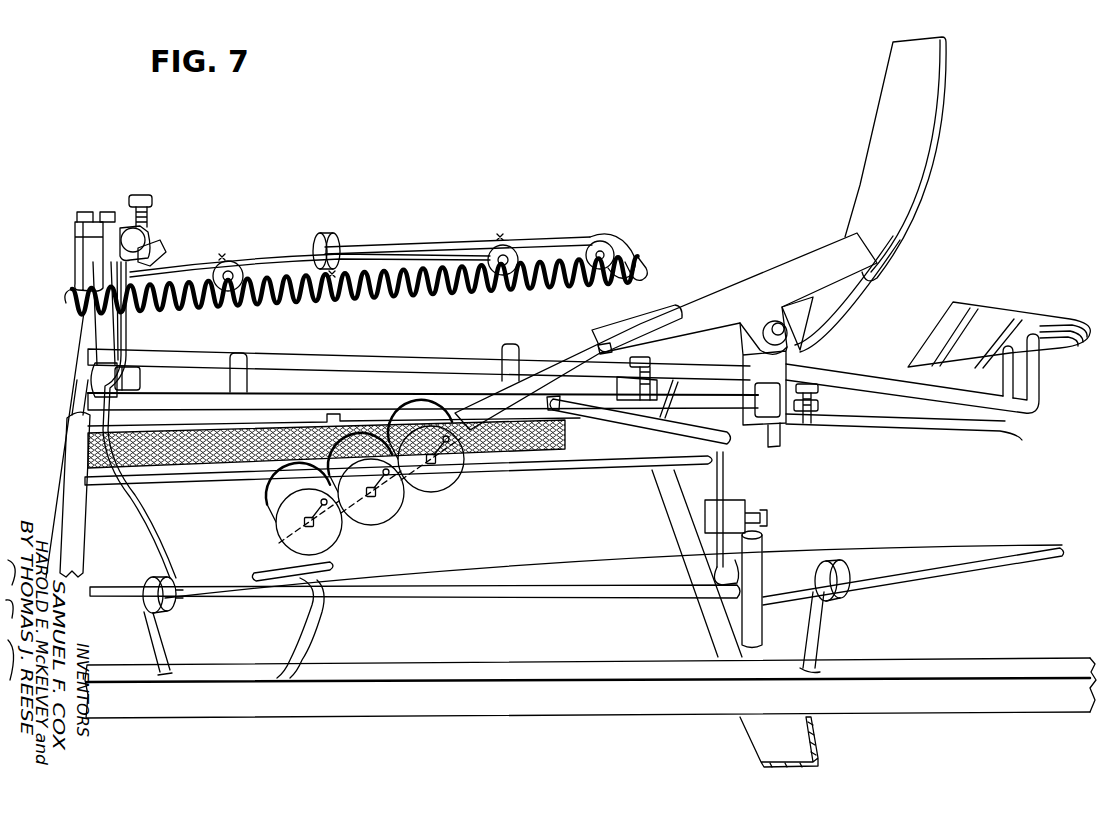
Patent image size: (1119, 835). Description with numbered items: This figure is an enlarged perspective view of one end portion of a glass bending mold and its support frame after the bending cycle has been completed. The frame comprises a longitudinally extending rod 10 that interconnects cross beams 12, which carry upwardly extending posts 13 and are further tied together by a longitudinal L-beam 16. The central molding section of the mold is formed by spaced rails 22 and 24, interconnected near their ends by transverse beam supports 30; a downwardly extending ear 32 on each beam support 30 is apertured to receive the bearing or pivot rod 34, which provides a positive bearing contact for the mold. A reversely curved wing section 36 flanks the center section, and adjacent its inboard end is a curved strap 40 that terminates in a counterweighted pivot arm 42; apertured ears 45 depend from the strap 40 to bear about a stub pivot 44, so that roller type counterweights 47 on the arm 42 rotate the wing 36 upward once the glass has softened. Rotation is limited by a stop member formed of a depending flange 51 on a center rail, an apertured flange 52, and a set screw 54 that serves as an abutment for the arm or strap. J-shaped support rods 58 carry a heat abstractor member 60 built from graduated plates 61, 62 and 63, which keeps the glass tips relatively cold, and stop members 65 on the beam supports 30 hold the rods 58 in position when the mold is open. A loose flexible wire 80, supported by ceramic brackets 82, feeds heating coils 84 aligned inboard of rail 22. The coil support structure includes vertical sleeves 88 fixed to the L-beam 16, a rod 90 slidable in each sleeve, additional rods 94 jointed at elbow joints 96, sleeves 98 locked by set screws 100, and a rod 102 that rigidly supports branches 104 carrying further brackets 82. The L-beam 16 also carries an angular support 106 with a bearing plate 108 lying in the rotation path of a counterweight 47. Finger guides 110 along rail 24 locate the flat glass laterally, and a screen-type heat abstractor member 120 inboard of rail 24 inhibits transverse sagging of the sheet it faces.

The longitudinally extending rod 10 is at (540, 599).
The cross beams 12 is at (819, 731).
The upwardly extending posts 13 is at (764, 572).
The longitudinally extending L-beam 16 is at (898, 661).
The rail 22 is at (303, 358).
The rail 24 is at (338, 376).
The beam supports 30 is at (750, 447).
The downwardly extending ear 32 is at (690, 481).
The bearing or pivot rod 34 is at (529, 470).
The wing sections 36 is at (895, 159).
The curved strap 40 is at (666, 331).
The counterweighted pivot arms 42 is at (626, 322).
The stub pivot 44 is at (826, 316).
The apertured ears 45 is at (796, 342).
The roller type counterweights 47 is at (405, 505).
The depending flange 51 is at (618, 400).
The apertured flange 52 is at (665, 355).
The set screw 54 is at (600, 348).
The J-shaped support rods 58 is at (1022, 413).
The heat abstractor members 60 is at (1024, 307).
The plate 61 is at (1048, 324).
The plate 62 is at (1064, 330).
The plate 63 is at (1079, 335).
The stop members 65 is at (818, 403).
The flexible wire 80 is at (408, 243).
The ceramic brackets 82 is at (231, 268).
The heating coils 84 is at (456, 303).
The vertical sleeves 88 is at (62, 466).
The rod 90 is at (80, 348).
The additional rods 94 is at (138, 238).
The elbow joints 96 is at (123, 222).
The sleeves 98 is at (158, 250).
The set screws 100 is at (139, 195).
The rod 102 is at (556, 238).
The branches 104 is at (490, 259).
The angular support 106 is at (321, 626).
The bearing plate 108 is at (332, 575).
The finger guides 110 is at (228, 374).
The heat abstractor member 120 is at (499, 426).